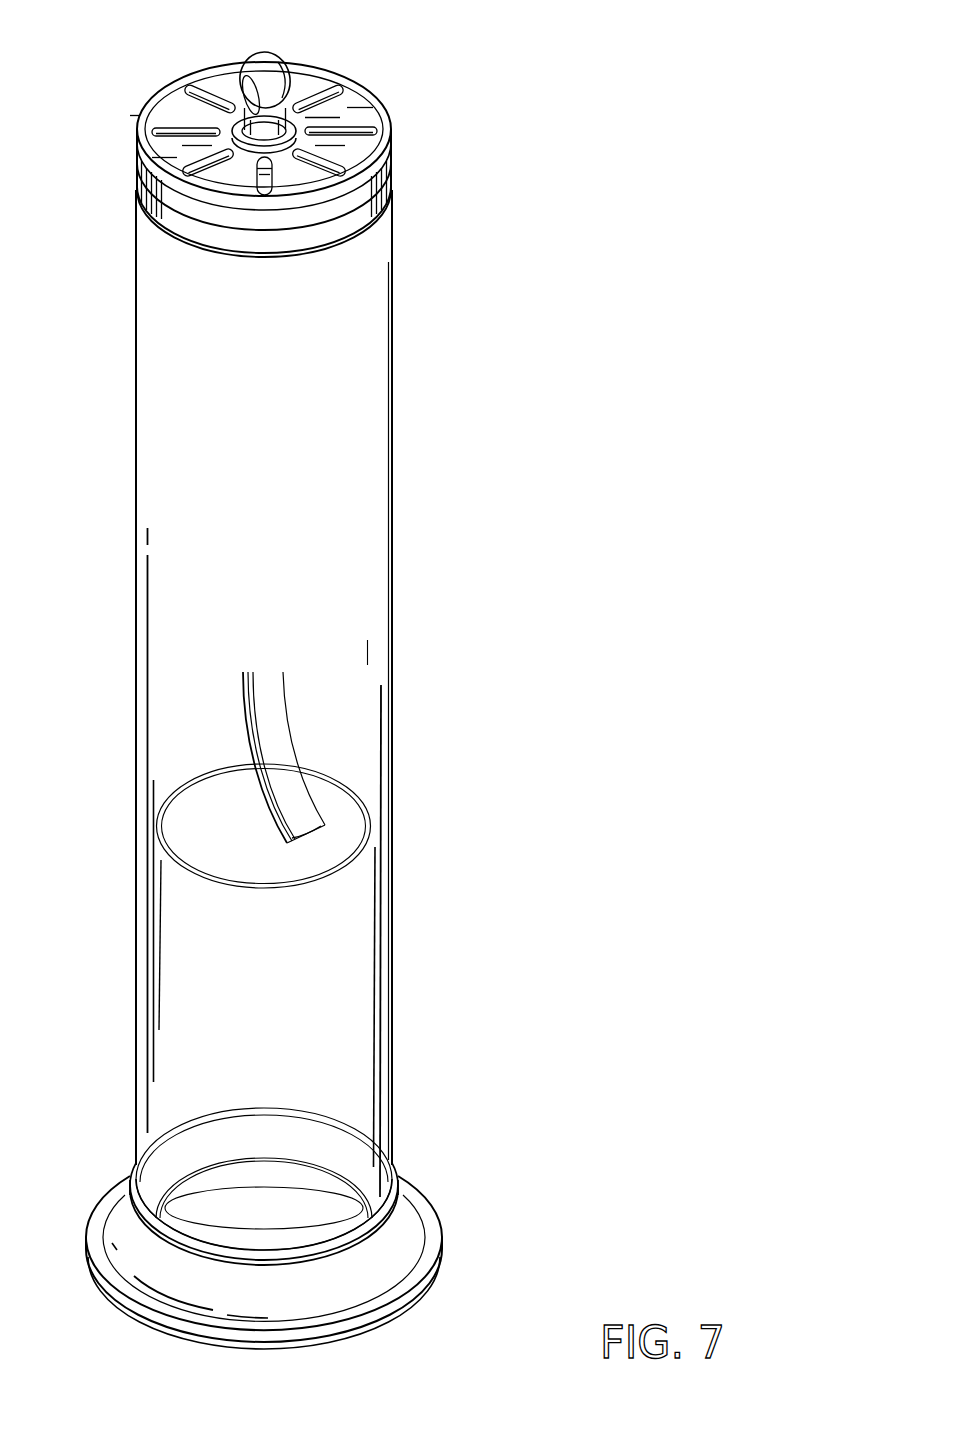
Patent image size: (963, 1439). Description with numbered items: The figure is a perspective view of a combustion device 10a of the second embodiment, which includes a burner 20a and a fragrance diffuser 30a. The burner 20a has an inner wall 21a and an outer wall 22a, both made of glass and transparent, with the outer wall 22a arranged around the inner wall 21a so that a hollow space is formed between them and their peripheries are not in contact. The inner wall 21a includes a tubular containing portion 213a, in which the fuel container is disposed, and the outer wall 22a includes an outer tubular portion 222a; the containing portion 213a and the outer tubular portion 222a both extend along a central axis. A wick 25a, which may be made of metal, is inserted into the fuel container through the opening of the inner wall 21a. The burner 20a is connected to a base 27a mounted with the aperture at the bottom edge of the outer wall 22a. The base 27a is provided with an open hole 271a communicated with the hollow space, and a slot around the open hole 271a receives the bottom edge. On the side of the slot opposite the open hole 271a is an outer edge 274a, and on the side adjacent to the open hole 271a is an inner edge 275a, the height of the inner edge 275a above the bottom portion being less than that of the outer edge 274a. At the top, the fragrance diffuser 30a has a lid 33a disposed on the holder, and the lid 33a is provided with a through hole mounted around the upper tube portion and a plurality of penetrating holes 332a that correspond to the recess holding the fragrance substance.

The combustion device 10a is at (330, 674).
The burner 20a is at (355, 769).
The inner wall 21a is at (322, 720).
The containing portion 213a is at (367, 654).
The outer wall 22a is at (345, 808).
The outer tubular portion 222a is at (388, 817).
The wick 25a is at (265, 72).
The base 27a is at (334, 1194).
The open hole 271a is at (330, 1193).
The outer edge 274a is at (395, 1180).
The inner edge 275a is at (315, 1163).
The fragrance diffuser 30a is at (263, 128).
The lid 33a is at (383, 176).
The penetrating holes 332a is at (200, 88).